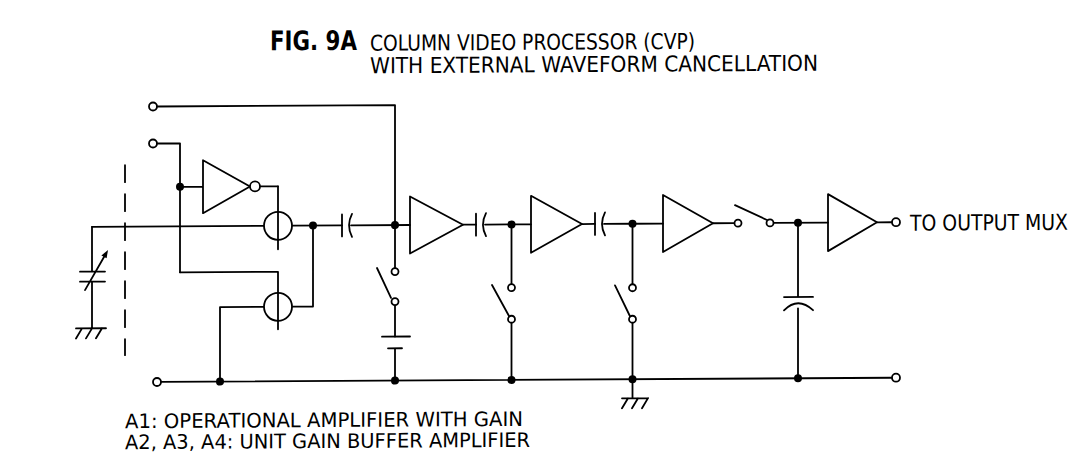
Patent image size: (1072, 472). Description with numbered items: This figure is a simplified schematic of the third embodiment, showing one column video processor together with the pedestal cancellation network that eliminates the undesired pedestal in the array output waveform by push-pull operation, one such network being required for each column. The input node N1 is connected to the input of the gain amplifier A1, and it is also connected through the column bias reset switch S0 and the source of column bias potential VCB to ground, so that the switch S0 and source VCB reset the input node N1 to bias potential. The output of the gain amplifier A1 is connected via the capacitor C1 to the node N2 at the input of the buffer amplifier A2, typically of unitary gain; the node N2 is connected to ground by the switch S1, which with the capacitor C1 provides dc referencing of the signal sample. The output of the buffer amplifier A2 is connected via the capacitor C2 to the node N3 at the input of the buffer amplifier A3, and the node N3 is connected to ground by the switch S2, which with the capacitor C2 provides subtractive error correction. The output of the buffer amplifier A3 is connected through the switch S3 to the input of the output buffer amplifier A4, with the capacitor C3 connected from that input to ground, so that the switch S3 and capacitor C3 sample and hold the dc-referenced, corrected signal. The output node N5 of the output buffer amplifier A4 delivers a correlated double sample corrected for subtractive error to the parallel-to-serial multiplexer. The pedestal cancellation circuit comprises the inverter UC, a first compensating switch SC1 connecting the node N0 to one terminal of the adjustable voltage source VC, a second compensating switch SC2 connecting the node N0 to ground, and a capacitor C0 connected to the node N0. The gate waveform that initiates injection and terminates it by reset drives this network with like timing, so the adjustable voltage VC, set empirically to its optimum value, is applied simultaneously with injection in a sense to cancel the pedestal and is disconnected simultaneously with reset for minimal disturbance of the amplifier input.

The input node N1 is at (257, 160).
The inverter UC is at (229, 187).
The first compensating switch SC1 is at (261, 222).
The second compensating switch SC2 is at (246, 304).
The adjustable voltage source VC is at (76, 283).
The node N0 is at (314, 214).
The capacitor C0 is at (347, 212).
The gain amplifier A1 is at (436, 224).
The capacitor C1 is at (481, 212).
The node N2 is at (514, 213).
The buffer amplifier A2 is at (556, 224).
The capacitor C2 is at (599, 212).
The node N3 is at (635, 213).
The buffer amplifier A3 is at (688, 223).
The switch S3 is at (754, 205).
The output buffer amplifier A4 is at (852, 222).
The output node N5 is at (889, 210).
The capacitor C3 is at (811, 301).
The column bias reset switch S0 is at (401, 281).
The source of column bias potential VCB is at (417, 357).
The switch S1 is at (516, 302).
The switch S2 is at (638, 316).